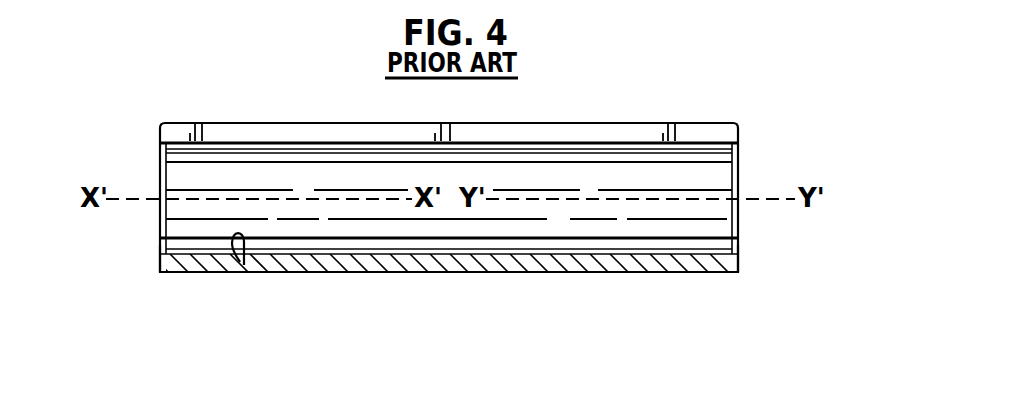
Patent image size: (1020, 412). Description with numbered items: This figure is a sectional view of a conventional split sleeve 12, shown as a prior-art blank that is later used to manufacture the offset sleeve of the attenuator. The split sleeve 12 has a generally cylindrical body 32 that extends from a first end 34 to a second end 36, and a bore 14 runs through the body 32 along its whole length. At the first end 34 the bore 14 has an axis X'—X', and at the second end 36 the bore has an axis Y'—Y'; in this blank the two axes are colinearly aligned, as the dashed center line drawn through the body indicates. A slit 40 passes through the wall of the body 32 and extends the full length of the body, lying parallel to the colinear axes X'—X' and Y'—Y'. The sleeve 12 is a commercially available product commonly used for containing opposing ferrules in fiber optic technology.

The split sleeve 12 is at (587, 105).
The bore 14 is at (244, 265).
The body 32 is at (414, 277).
The first end 34 is at (160, 262).
The second end 36 is at (738, 255).
The slit 40 is at (677, 133).